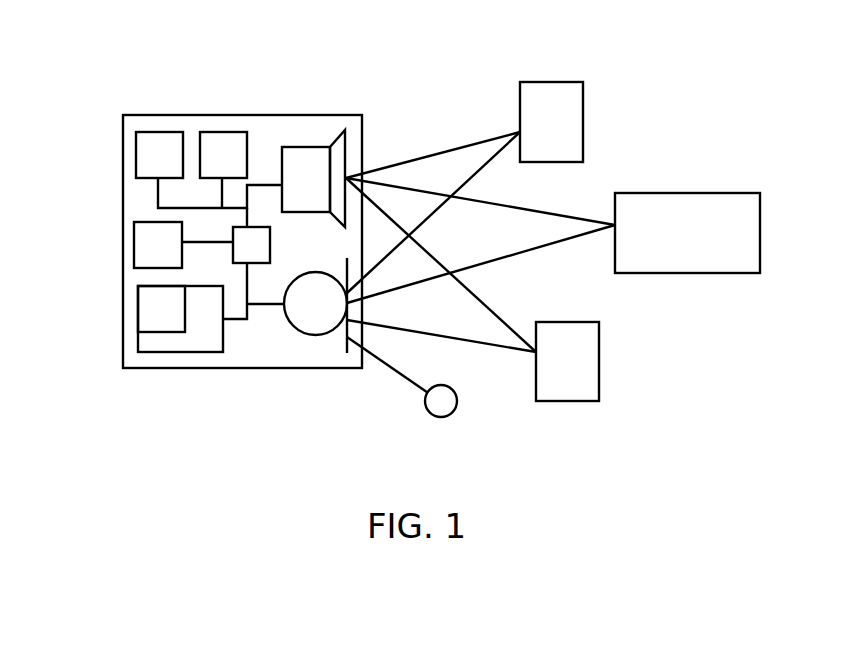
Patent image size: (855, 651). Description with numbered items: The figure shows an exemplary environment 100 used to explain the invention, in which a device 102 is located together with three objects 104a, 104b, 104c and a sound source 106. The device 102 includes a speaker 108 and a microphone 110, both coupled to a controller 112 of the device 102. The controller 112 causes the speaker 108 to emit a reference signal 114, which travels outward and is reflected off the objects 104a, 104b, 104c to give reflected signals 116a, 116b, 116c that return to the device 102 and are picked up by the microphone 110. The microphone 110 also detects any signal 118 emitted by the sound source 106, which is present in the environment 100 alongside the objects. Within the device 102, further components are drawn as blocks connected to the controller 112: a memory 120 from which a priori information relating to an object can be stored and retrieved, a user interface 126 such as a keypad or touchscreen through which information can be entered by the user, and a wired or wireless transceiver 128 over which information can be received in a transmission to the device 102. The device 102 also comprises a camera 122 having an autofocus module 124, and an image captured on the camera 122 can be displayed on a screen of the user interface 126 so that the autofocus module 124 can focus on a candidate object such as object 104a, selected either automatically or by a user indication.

The environment 100 is at (624, 81).
The device 102 is at (160, 115).
The object 104a is at (687, 193).
The object 104b is at (540, 82).
The object 104c is at (599, 343).
The sound source 106 is at (440, 417).
The speaker 108 is at (310, 147).
The microphone 110 is at (298, 336).
The controller 112 is at (263, 263).
The reference signal 114 is at (383, 212).
The reflected signal 116a is at (505, 260).
The reflected signal 116b is at (472, 177).
The reflected signal 116c is at (478, 343).
The signal emitted by sound source 118 is at (380, 363).
The memory 120 is at (135, 147).
The camera 122 is at (207, 352).
The autofocus module 124 is at (162, 332).
The user interface 126 is at (218, 132).
The transceiver 128 is at (133, 243).